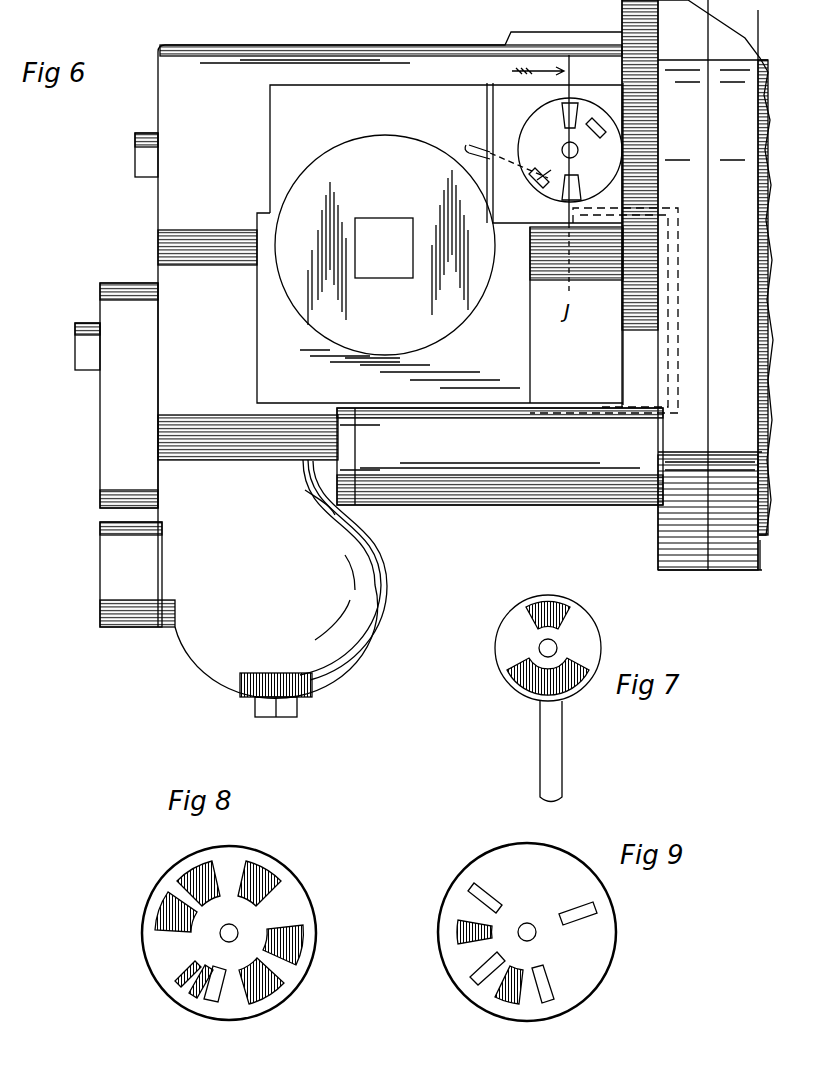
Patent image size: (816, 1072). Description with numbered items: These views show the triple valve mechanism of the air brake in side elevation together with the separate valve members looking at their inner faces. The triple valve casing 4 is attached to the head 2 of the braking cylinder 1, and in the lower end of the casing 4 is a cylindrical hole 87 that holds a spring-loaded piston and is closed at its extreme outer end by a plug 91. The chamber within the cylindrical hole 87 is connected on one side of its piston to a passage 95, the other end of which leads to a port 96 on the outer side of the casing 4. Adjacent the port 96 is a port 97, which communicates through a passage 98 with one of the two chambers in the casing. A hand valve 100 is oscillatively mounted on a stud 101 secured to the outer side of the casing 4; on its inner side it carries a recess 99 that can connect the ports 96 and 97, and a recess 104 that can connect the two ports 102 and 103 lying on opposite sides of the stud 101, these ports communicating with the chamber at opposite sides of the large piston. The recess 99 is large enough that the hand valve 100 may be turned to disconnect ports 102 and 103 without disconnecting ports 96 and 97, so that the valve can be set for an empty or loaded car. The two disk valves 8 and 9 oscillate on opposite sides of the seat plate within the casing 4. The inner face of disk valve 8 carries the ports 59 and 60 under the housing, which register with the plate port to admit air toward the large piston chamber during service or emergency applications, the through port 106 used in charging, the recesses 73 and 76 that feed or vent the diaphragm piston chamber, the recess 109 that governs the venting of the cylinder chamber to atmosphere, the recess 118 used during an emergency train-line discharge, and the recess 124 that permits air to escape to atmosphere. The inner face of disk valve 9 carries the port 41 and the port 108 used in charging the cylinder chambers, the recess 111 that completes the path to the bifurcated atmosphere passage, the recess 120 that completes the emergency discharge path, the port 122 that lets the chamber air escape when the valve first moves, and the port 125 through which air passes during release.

In FIG. 6, the braking cylinder 1 is at (756, 570).
In FIG. 6, the head 2 is at (660, 550).
In FIG. 6, the triple valve casing 4 is at (424, 358).
In FIG. 8, the disk valve 8 is at (229, 933).
In FIG. 9, the disk valve 9 is at (527, 932).
In FIG. 9, the port 41 is at (472, 978).
In FIG. 8, the port 59 is at (183, 986).
In FIG. 8, the port 60 is at (198, 1000).
In FIG. 8, the recess 73 is at (268, 870).
In FIG. 8, the recess 76 is at (180, 880).
In FIG. 6, the cylindrical hole 87 is at (545, 450).
In FIG. 6, the plug 91 is at (350, 452).
In FIG. 6, the passage 95 is at (678, 372).
In FIG. 6, the port 96 is at (536, 186).
In FIG. 6, the port 97 is at (553, 170).
In FIG. 6, the passage 98 is at (477, 142).
In FIG. 7, the recess 99 is at (575, 670).
In FIG. 7, the hand valve 100 is at (598, 636).
In FIG. 6, the stud 101 is at (580, 156).
In FIG. 6, the port 102 is at (560, 105).
In FIG. 6, the port 103 is at (603, 118).
In FIG. 7, the recess 104 is at (546, 612).
In FIG. 8, the port 106 is at (215, 1000).
In FIG. 9, the port 108 is at (547, 1003).
In FIG. 8, the recess 109 is at (298, 944).
In FIG. 9, the recess 111 is at (458, 933).
In FIG. 8, the recess 118 is at (275, 995).
In FIG. 9, the recess 120 is at (508, 1004).
In FIG. 9, the port 122 is at (598, 910).
In FIG. 8, the recess 124 is at (162, 910).
In FIG. 9, the port 125 is at (466, 892).